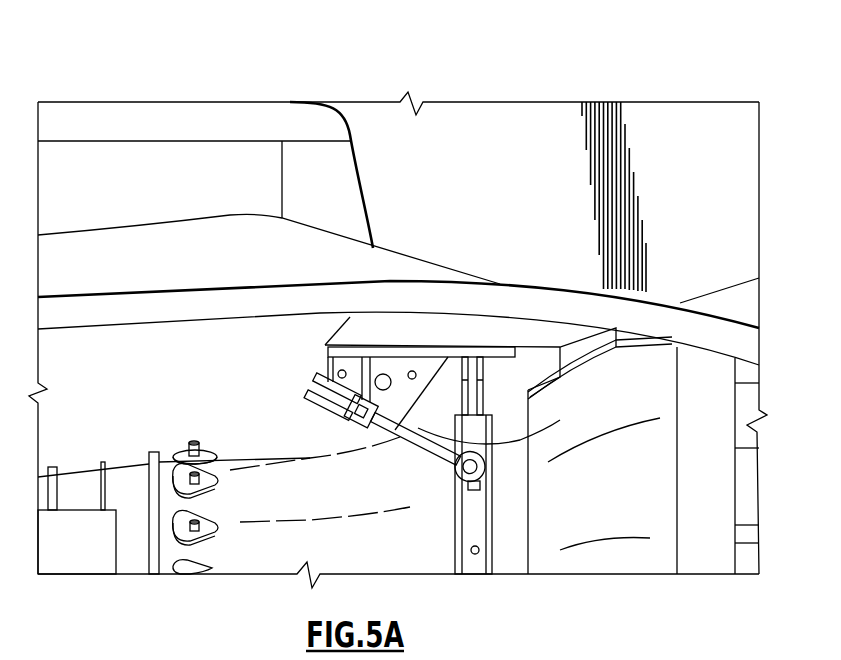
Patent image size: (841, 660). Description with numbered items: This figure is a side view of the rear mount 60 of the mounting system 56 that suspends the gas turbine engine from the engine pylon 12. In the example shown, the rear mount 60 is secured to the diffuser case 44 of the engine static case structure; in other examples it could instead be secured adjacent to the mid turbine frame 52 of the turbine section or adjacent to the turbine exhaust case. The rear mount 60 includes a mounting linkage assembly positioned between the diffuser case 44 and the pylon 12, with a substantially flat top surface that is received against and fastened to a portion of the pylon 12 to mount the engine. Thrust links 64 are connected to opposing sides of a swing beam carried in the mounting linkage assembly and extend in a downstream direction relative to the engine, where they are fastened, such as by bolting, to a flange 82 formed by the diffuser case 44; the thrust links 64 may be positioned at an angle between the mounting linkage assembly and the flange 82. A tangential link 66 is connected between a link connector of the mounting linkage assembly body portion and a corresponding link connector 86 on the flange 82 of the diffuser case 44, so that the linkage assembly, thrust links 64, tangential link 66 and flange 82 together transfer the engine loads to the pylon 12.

The engine pylon 12 is at (447, 140).
The diffuser case 44 is at (375, 548).
The mid turbine frame 52 is at (479, 572).
The mounting system 56 is at (300, 94).
The rear mount 60 is at (456, 330).
The thrust links 64 is at (398, 437).
The tangential link 66 is at (525, 378).
The flange 82 is at (520, 512).
The link connector 86 is at (520, 443).